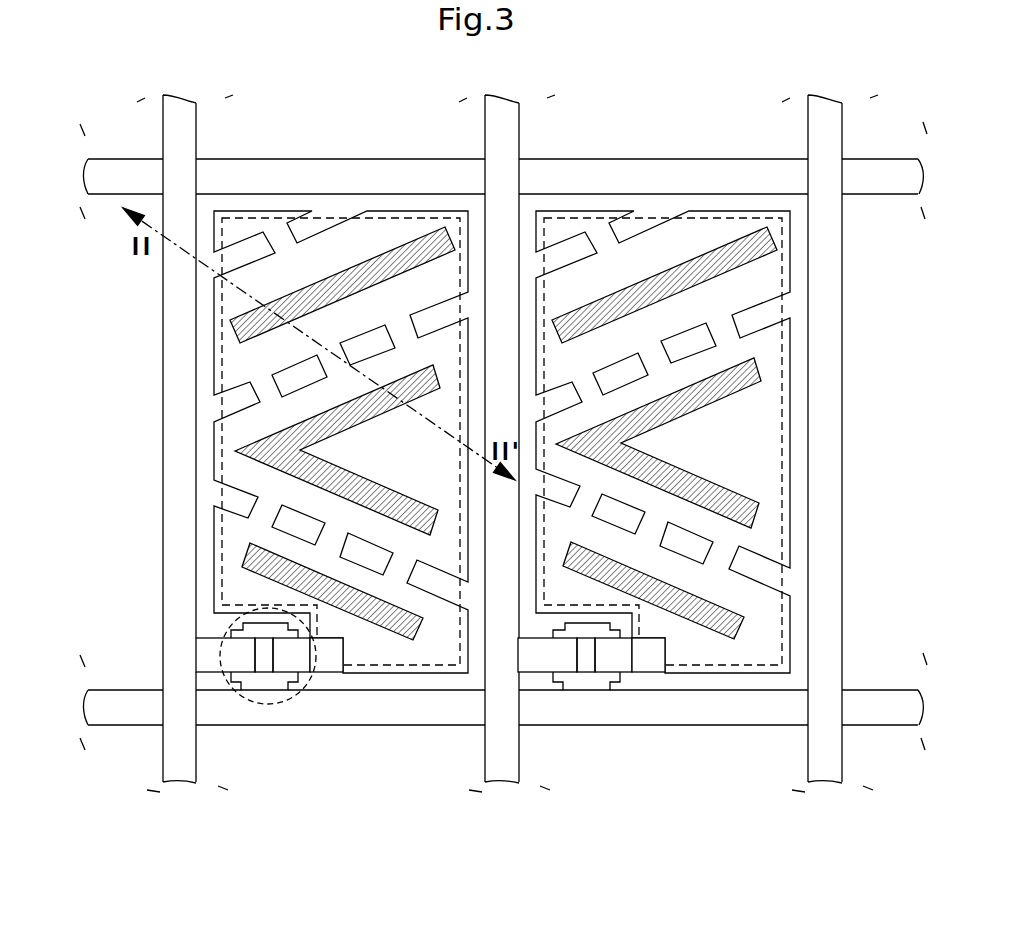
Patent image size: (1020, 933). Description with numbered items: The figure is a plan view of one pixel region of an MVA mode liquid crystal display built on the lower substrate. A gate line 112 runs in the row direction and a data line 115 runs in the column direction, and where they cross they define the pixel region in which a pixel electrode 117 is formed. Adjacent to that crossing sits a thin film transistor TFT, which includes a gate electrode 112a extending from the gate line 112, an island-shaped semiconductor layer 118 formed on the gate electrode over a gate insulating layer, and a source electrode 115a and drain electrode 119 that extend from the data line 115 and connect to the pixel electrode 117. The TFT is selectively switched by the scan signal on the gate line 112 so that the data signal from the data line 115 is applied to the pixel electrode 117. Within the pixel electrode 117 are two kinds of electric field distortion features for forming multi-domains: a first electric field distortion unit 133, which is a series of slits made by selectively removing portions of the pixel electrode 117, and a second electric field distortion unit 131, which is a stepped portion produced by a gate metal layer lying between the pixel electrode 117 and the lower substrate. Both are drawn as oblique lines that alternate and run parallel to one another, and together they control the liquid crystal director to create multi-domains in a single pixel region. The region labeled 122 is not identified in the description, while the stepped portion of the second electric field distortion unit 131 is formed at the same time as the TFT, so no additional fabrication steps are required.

The gate line 112 is at (885, 702).
The gate electrode 112a is at (266, 622).
The data line 115 is at (175, 600).
The source electrode 115a is at (231, 658).
The pixel electrode 117 is at (376, 673).
The semiconductor layer 118 is at (268, 672).
The drain electrode 119 is at (315, 672).
The opening region of light blocking member 122 is at (386, 216).
The second electric field distortion unit 131 is at (238, 322).
The first electric field distortion unit 133 is at (236, 446).
The thin film transistor TFT is at (292, 704).